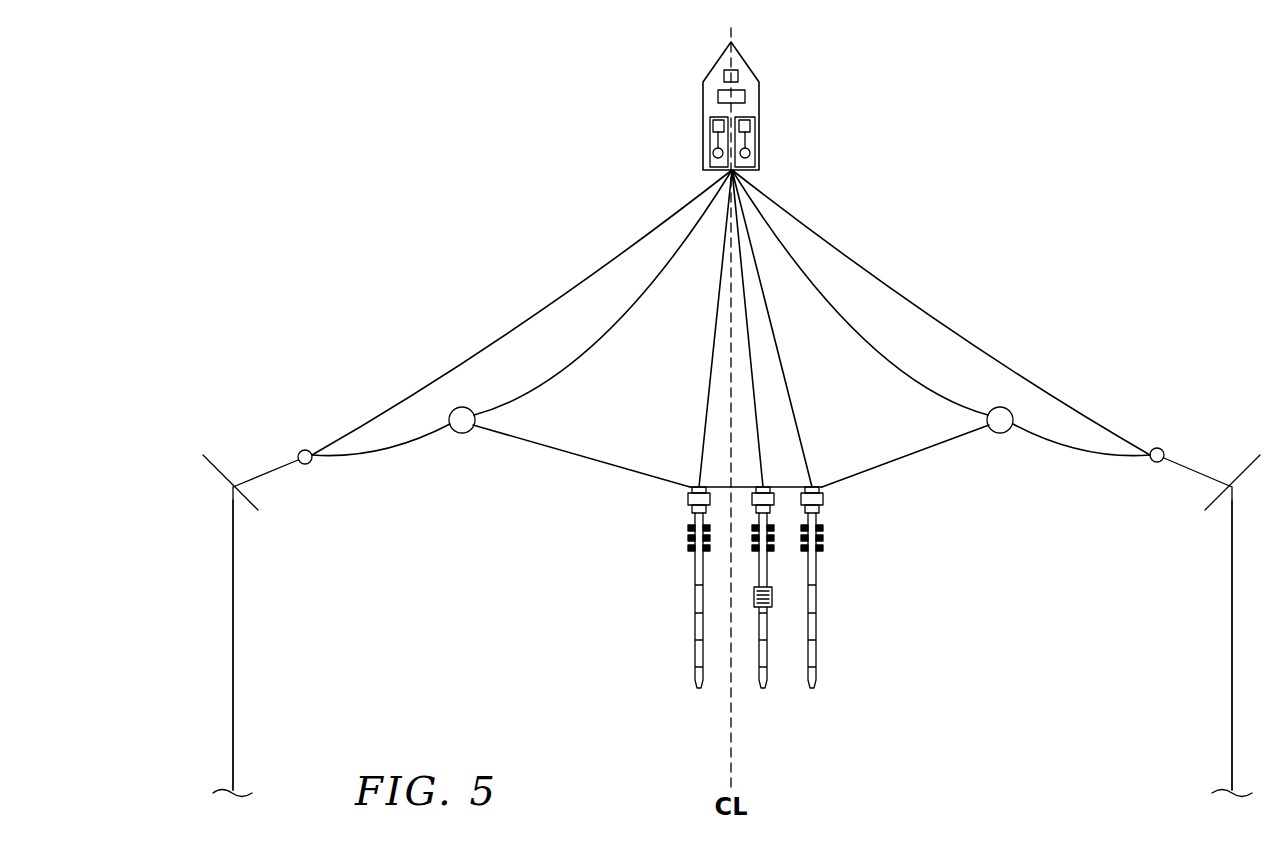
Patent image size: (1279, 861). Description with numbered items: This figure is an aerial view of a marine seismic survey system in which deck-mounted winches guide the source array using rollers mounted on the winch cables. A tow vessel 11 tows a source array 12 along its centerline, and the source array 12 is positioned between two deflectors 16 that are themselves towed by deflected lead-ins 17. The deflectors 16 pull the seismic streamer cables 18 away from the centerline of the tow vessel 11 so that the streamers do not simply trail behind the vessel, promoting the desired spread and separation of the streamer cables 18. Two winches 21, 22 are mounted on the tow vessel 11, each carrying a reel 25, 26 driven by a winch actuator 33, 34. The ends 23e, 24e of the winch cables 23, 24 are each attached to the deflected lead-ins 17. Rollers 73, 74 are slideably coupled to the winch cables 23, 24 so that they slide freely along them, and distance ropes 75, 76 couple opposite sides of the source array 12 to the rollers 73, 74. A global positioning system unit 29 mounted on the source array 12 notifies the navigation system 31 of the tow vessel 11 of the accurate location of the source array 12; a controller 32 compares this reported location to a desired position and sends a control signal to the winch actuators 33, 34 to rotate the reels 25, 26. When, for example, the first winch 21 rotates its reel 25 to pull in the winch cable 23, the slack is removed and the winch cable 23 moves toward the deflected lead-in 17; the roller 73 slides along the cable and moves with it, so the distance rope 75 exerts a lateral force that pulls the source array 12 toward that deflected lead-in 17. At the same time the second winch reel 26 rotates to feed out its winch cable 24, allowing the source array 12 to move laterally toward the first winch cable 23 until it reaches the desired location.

The tow vessel 11 is at (714, 66).
The source array 12 is at (722, 710).
The deflectors 16 is at (210, 458).
The deflected lead-ins 17 is at (495, 343).
The seismic streamer cables 18 is at (232, 683).
The first winch 21 is at (708, 140).
The second winch 22 is at (757, 140).
The first winch cable 23 is at (618, 326).
The second winch cable 24 is at (836, 318).
The end of first winch cable 23e is at (694, 487).
The end of second winch cable 24e is at (816, 487).
The first winch reel 25 is at (713, 153).
The second winch reel 26 is at (750, 153).
The global positioning system unit 29 is at (773, 600).
The navigation system 31 is at (742, 76).
The controller 32 is at (748, 98).
The first winch actuator 33 is at (710, 122).
The second winch actuator 34 is at (757, 122).
The first roller 73 is at (470, 410).
The second roller 74 is at (992, 410).
The first distance rope 75 is at (508, 437).
The second distance rope 76 is at (945, 447).